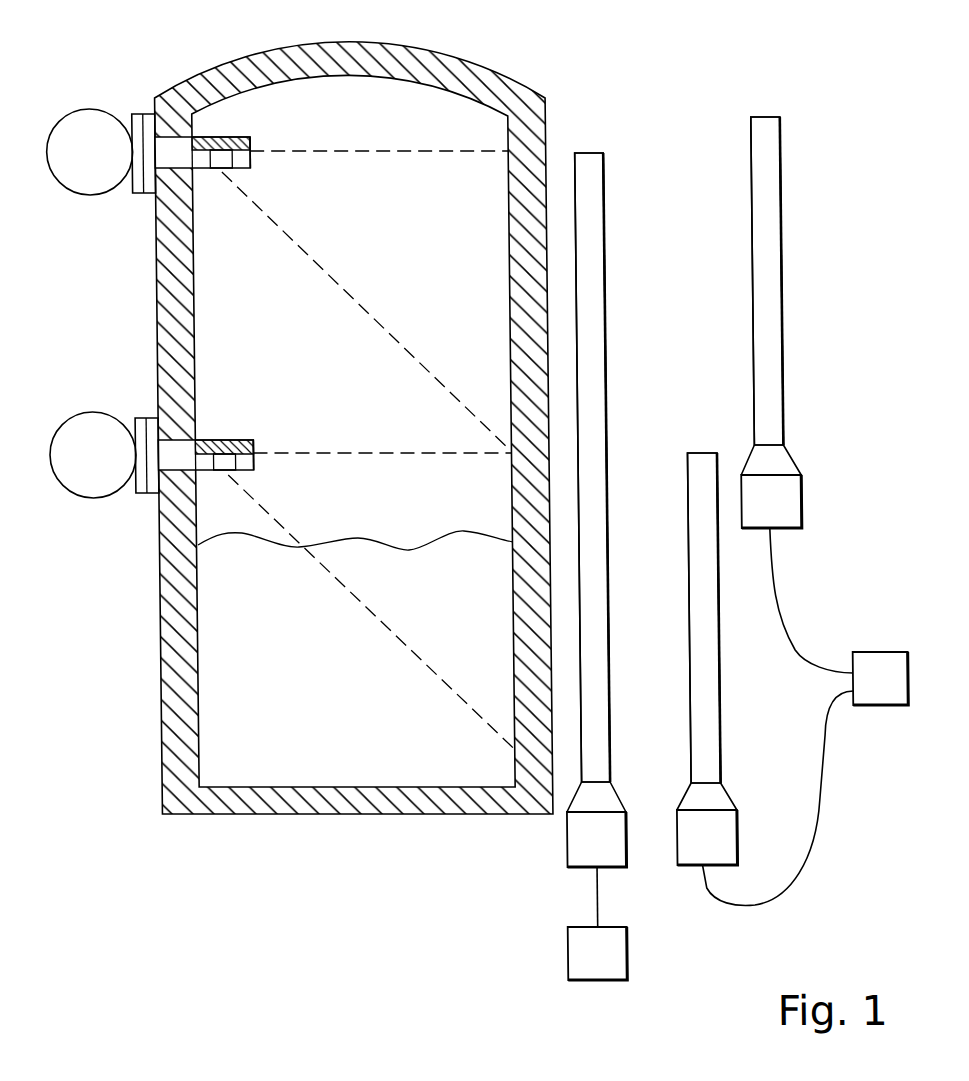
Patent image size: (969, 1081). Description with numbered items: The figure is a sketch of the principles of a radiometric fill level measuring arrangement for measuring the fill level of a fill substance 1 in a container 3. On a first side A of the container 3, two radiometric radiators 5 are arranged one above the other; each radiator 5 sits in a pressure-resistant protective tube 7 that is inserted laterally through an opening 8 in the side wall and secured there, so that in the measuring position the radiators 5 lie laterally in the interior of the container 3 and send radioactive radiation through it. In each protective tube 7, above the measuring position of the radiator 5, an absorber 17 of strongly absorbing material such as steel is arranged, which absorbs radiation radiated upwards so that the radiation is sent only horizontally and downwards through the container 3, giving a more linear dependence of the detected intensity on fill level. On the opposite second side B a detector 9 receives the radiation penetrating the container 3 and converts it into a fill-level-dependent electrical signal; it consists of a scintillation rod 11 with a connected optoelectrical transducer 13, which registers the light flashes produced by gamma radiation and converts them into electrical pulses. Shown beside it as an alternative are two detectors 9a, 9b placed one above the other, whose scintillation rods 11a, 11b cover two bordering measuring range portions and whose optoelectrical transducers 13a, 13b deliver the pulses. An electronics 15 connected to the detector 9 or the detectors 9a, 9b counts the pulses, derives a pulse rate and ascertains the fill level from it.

The fill substance 1 is at (280, 688).
The container 3 is at (170, 692).
The radiometric radiator 5 is at (221, 163).
The protective tube 7 is at (226, 137).
The opening 8 is at (176, 136).
The absorber 17 is at (248, 140).
The detector 9 is at (608, 398).
The detector 9a is at (786, 344).
The detector 9b is at (715, 720).
The scintillation rod 11 is at (594, 608).
The scintillation rod 11a is at (764, 272).
The scintillation rod 11b is at (700, 692).
The optoelectrical transducer 13 is at (570, 855).
The optoelectrical transducer 13a is at (740, 515).
The optoelectrical transducer 13b is at (672, 853).
The electronics 15 is at (569, 970).
The first side A is at (103, 362).
The second side B is at (574, 127).